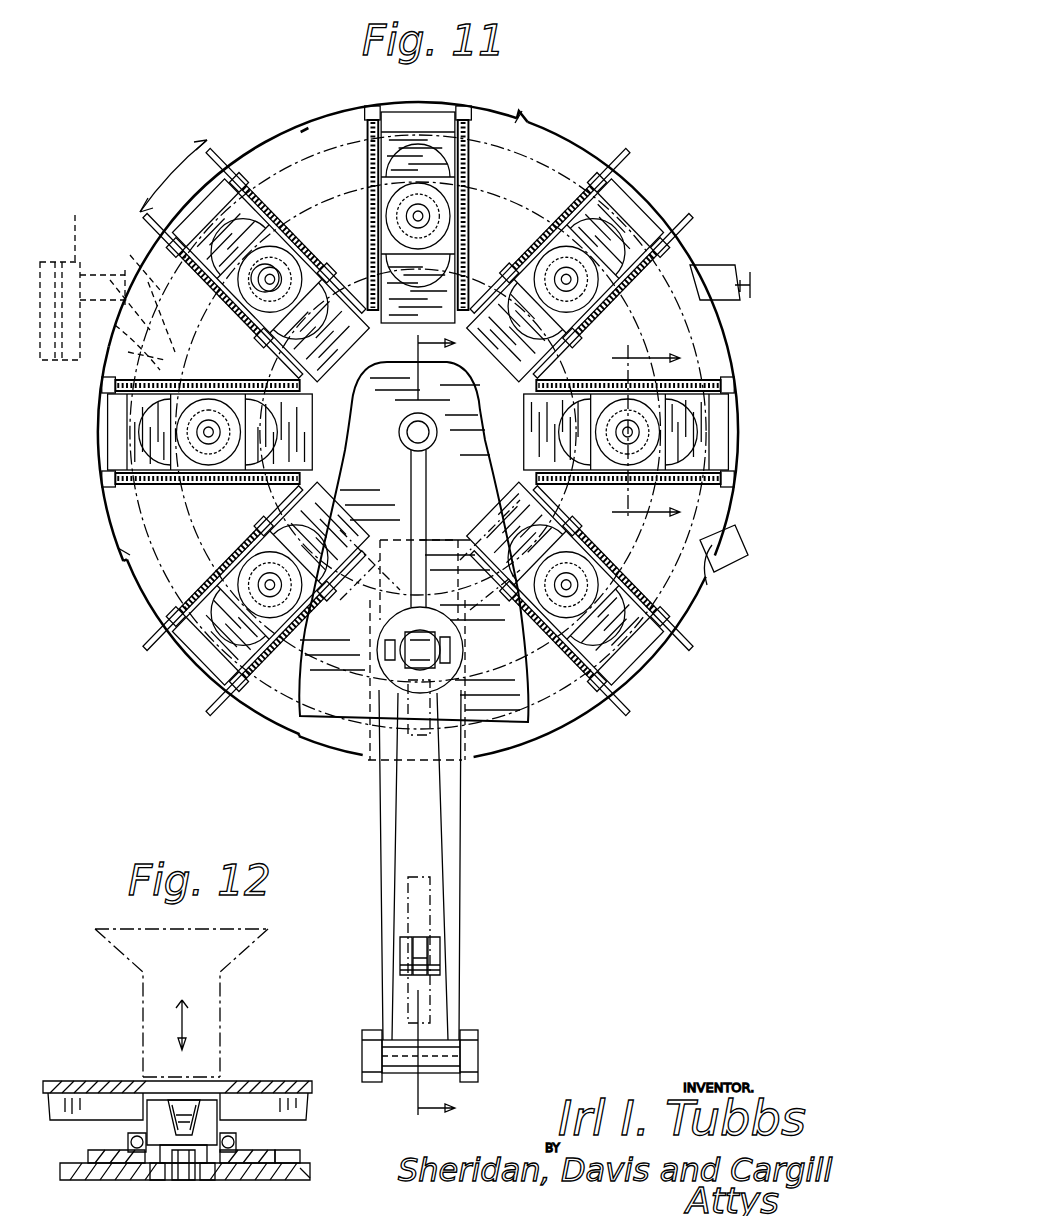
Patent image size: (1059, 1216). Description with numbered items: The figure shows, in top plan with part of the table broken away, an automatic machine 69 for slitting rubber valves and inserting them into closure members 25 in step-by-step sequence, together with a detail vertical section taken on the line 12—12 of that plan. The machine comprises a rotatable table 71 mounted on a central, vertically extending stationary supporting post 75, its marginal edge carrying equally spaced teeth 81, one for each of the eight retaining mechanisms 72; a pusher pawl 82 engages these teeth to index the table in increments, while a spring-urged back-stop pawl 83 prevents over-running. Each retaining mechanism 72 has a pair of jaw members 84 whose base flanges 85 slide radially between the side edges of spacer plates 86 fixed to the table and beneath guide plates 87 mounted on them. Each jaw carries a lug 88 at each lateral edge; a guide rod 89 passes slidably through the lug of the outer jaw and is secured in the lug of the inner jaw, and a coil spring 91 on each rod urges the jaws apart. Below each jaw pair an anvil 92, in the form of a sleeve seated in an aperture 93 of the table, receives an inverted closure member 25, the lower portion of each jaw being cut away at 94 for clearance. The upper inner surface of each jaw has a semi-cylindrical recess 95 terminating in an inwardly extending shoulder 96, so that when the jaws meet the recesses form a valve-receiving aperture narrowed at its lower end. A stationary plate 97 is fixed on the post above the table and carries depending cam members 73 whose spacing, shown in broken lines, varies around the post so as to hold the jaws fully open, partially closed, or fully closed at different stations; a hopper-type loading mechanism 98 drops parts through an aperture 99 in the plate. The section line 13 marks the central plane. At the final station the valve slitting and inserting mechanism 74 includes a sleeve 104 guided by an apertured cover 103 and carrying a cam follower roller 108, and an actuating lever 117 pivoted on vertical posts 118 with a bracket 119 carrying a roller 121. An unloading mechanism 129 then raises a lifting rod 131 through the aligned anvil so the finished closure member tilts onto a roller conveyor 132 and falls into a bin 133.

In FIG. 11, the rotatable table 71 is at (322, 99).
In FIG. 12, the rotatable table 71 is at (312, 1172).
In FIG. 11, the teeth 81 is at (297, 130).
In FIG. 11, the machine 69 is at (548, 118).
In FIG. 11, the stationary cam members 73 is at (150, 530).
In FIG. 11, the pusher pawl 82 is at (735, 535).
In FIG. 11, the back-stop pawl 83 is at (722, 265).
In FIG. 11, the jaw members 84 is at (422, 104).
In FIG. 12, the jaw members 84 is at (157, 1130).
In FIG. 11, the retaining mechanisms 72 is at (627, 192).
In FIG. 11, the guide rod 89 is at (605, 165).
In FIG. 12, the guide rod 89 is at (236, 1135).
In FIG. 11, the lug 88 is at (638, 290).
In FIG. 12, the lug 88 is at (255, 1168).
In FIG. 11, the coil spring 91 is at (452, 232).
In FIG. 12, the coil spring 91 is at (236, 1146).
In FIG. 11, the closure member 25 is at (452, 213).
In FIG. 12, the closure member 25 is at (185, 1170).
In FIG. 11, the semi-cylindrical recess 95 is at (268, 235).
In FIG. 12, the semi-cylindrical recess 95 is at (178, 1110).
In FIG. 11, the anvil 92 is at (288, 245).
In FIG. 12, the anvil 92 is at (170, 1165).
In FIG. 11, the shoulder 96 is at (318, 265).
In FIG. 12, the shoulder 96 is at (203, 1135).
In FIG. 11, the bin 133 is at (58, 277).
In FIG. 11, the conveyor 132 is at (132, 255).
In FIG. 11, the unloading mechanism 129 is at (128, 368).
In FIG. 11, the lifting rod 131 is at (235, 388).
In FIG. 11, the section line 13 is at (415, 727).
In FIG. 11, the section line 12 is at (631, 434).
In FIG. 11, the stationary plate 97 is at (360, 412).
In FIG. 12, the stationary plate 97 is at (75, 1085).
In FIG. 11, the supporting post 75 is at (408, 436).
In FIG. 11, the cover 103 is at (390, 657).
In FIG. 11, the sleeve 104 is at (398, 640).
In FIG. 11, the cam follower roller 108 is at (440, 647).
In FIG. 11, the valve slitting and inserting mechanism 74 is at (478, 702).
In FIG. 11, the actuating lever 117 is at (410, 830).
In FIG. 11, the bracket 119 is at (403, 947).
In FIG. 11, the cam follower roller 121 is at (420, 938).
In FIG. 11, the vertical posts 118 is at (462, 1045).
In FIG. 12, the hopper-type loading mechanism 98 is at (157, 1005).
In FIG. 12, the aperture 99 is at (233, 1085).
In FIG. 12, the cut-away 94 is at (215, 1140).
In FIG. 12, the guide plates 87 is at (100, 1153).
In FIG. 12, the spacer plates 86 is at (88, 1172).
In FIG. 12, the base flanges 85 is at (150, 1170).
In FIG. 12, the aperture 93 is at (208, 1172).